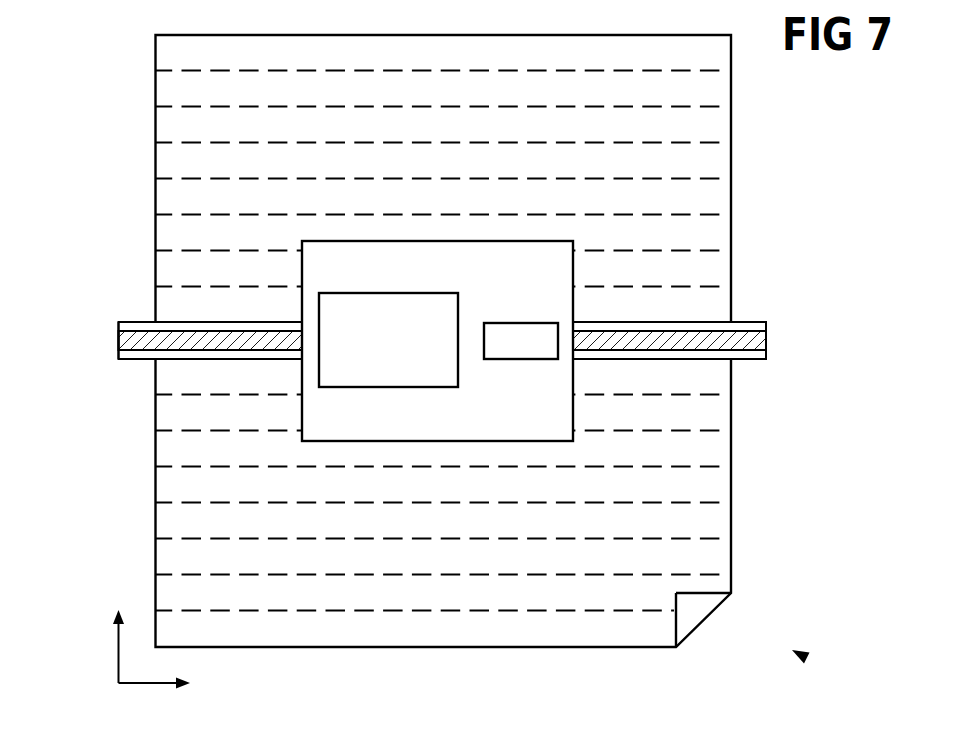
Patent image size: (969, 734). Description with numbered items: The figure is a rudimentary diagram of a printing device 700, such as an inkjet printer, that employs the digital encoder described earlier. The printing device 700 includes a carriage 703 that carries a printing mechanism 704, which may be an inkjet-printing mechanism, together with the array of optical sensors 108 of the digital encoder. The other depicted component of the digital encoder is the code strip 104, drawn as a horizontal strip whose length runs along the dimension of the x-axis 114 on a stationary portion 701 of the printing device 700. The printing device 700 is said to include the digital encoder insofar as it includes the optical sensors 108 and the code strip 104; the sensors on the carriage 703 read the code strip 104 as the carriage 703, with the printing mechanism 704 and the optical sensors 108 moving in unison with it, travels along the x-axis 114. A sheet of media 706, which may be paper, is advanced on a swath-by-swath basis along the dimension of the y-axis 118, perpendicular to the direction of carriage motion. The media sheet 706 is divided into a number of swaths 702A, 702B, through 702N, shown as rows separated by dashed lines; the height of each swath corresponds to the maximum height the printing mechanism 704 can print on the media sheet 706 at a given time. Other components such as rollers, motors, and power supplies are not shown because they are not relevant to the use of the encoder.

The printing device 700 is at (805, 656).
The stationary portion 701 is at (118, 358).
The swath 702A is at (218, 64).
The swath 702B is at (218, 98).
The swath 702N is at (220, 638).
The carriage 703 is at (564, 272).
The printing mechanism 704 is at (366, 328).
The array of optical sensors 108 is at (541, 350).
The code strip 104 is at (766, 340).
The sheet of media 706 is at (731, 95).
The x-axis 114 is at (134, 686).
The y-axis 118 is at (118, 670).